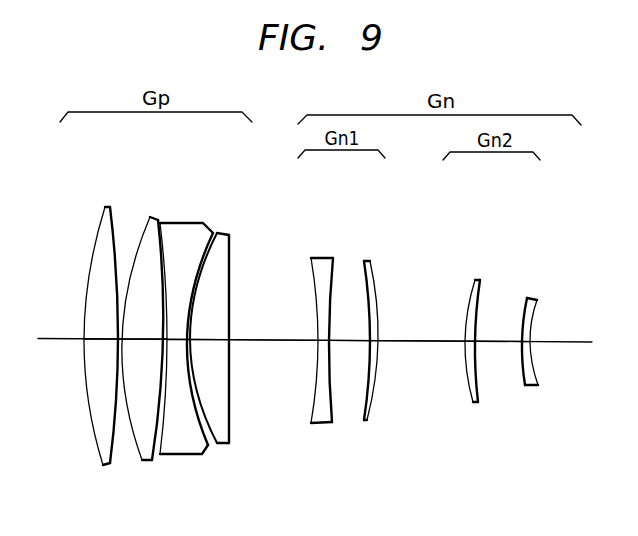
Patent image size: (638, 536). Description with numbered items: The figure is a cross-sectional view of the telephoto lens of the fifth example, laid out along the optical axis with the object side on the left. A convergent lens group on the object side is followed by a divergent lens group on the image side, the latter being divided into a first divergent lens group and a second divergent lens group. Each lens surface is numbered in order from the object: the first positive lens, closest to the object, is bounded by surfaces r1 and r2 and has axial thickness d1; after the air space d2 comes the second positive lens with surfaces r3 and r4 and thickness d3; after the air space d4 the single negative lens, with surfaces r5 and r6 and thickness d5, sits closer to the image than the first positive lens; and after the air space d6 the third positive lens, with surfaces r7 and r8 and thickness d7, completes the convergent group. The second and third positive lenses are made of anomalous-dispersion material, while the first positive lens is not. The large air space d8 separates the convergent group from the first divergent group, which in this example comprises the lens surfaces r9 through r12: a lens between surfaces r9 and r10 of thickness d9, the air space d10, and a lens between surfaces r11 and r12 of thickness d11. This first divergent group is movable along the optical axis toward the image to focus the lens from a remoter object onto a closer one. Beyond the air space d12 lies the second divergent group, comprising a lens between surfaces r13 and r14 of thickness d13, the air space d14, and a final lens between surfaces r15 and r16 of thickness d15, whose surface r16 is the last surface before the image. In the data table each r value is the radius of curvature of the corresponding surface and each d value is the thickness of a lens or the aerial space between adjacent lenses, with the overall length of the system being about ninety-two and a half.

The first lens surface r1 is at (106, 208).
The second lens surface r2 is at (109, 207).
The third lens surface r3 is at (150, 217).
The fourth lens surface r4 is at (158, 218).
The fifth lens surface r5 is at (161, 221).
The sixth lens surface r6 is at (212, 232).
The seventh lens surface r7 is at (219, 234).
The eighth lens surface r8 is at (229, 235).
The ninth lens surface r9 is at (312, 257).
The tenth lens surface r10 is at (334, 257).
The eleventh lens surface r11 is at (365, 260).
The twelfth lens surface r12 is at (377, 261).
The thirteenth lens surface r13 is at (477, 279).
The fourteenth lens surface r14 is at (481, 280).
The fifteenth lens surface r15 is at (530, 298).
The sixteenth lens surface r16 is at (539, 300).
The thickness of the first lens d1 is at (103, 340).
The aerial space between the first and second lenses d2 is at (140, 340).
The thickness of the second lens d3 is at (160, 340).
The aerial space between the second lens and the negative lens d4 is at (170, 340).
The thickness of the negative lens d5 is at (176, 341).
The aerial space between the negative lens and the third positive lens d6 is at (212, 340).
The thickness of the third positive lens d7 is at (229, 400).
The aerial space between the convergent and divergent groups d8 is at (273, 340).
The thickness of the first lens of Gn1 d9 is at (345, 343).
The aerial space within Gn1 d10 is at (373, 345).
The thickness of the second lens of Gn1 d11 is at (379, 345).
The aerial space between Gn1 and Gn2 d12 is at (418, 344).
The thickness of the first lens of Gn2 d13 is at (467, 343).
The aerial space within Gn2 d14 is at (493, 344).
The thickness of the last lens d15 is at (530, 345).